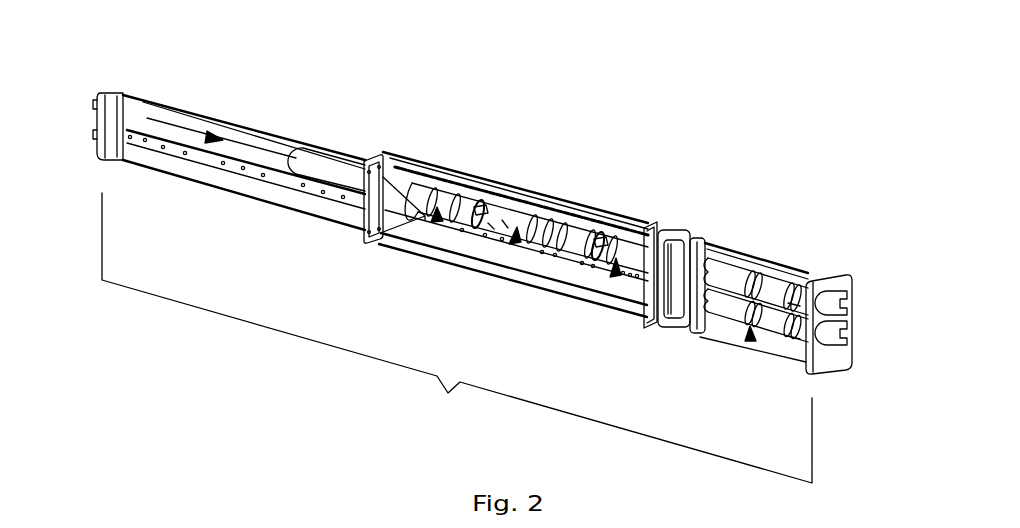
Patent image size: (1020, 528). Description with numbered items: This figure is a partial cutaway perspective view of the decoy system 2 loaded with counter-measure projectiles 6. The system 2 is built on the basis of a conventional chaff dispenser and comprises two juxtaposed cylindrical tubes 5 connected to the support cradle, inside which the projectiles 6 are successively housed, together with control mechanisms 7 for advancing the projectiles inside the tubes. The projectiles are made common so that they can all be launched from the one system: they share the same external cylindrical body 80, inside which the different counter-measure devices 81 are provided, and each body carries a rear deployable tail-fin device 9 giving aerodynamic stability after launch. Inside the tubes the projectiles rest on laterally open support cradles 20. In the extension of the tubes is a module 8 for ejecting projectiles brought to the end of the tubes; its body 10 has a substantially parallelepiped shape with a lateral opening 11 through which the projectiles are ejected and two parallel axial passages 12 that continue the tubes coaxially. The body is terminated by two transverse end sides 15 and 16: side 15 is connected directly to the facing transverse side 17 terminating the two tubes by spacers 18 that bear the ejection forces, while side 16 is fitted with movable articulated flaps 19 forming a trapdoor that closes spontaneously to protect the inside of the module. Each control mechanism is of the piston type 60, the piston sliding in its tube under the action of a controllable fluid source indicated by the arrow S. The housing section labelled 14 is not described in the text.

The decoy system 2 is at (457, 338).
The arrow indicating controllable fluid source S is at (196, 130).
The cylindrical tubes 5 is at (546, 224).
The projectiles 6 is at (434, 222).
The control mechanisms 7 is at (267, 140).
The module 8 is at (799, 316).
The rear deployable tail-fin device 9 is at (578, 237).
The body 10 is at (801, 254).
The lateral opening 11 is at (723, 330).
The axial passages 12 is at (702, 250).
The housing section 14 is at (740, 263).
The transverse end side 15 is at (698, 324).
The transverse end side 16 is at (850, 377).
The transverse side 17 is at (645, 314).
The spacers 18 is at (671, 330).
The movable articulated flaps 19 is at (841, 338).
The support cradles 20 is at (483, 196).
The piston 60 is at (323, 162).
The external cylindrical body 80 is at (505, 224).
The counter-measure devices 81 is at (490, 226).